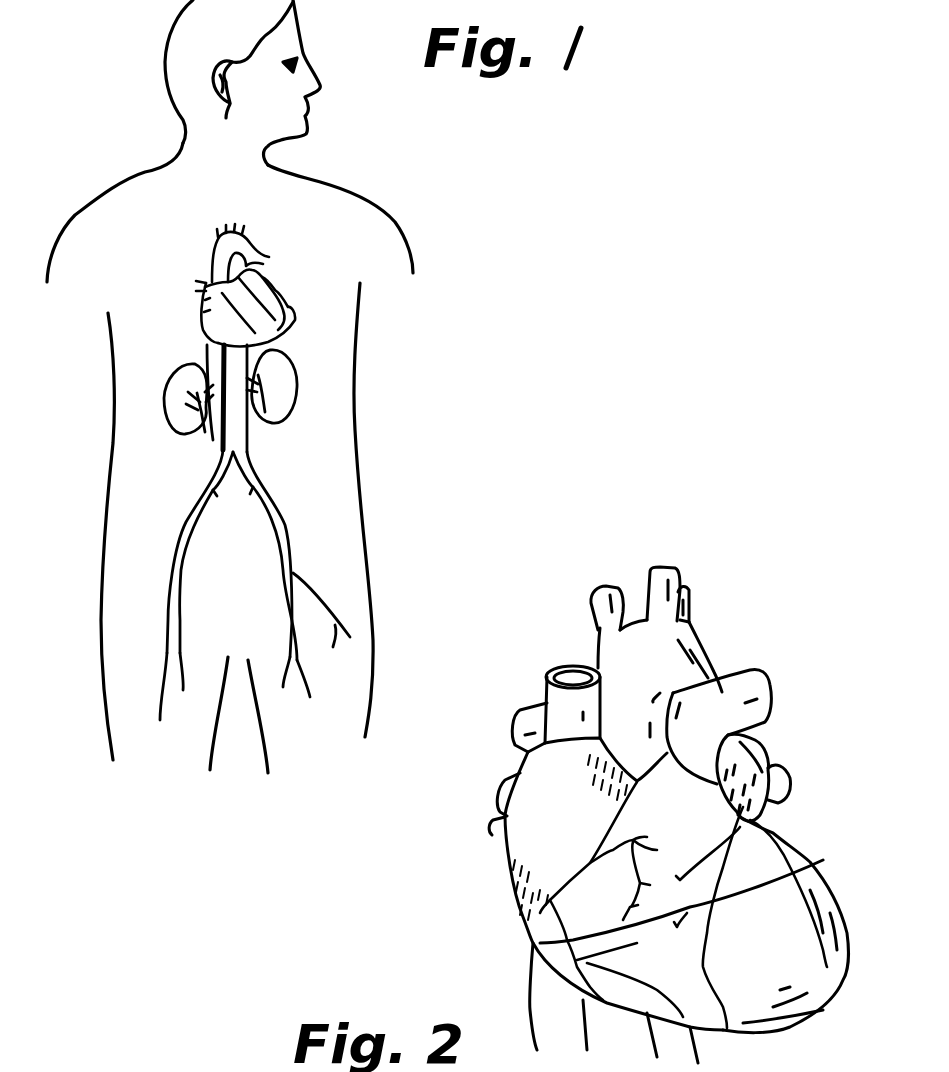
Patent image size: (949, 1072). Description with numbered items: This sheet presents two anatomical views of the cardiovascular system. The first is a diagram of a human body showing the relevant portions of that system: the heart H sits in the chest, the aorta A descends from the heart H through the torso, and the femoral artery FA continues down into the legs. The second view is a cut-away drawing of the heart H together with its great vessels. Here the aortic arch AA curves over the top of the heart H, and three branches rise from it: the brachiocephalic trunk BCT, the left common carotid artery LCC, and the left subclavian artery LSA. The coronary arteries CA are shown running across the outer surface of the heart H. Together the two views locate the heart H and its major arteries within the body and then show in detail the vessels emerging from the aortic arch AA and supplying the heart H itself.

In FIG. 1, the heart H is at (260, 321).
In FIG. 1, the aorta A is at (240, 373).
In FIG. 1, the femoral artery FA is at (287, 530).
In FIG. 2, the brachiocephalic trunk BCT is at (597, 610).
In FIG. 2, the left common carotid artery LCC is at (655, 587).
In FIG. 2, the left subclavian artery LSA is at (687, 598).
In FIG. 2, the aortic arch AA is at (671, 672).
In FIG. 2, the coronary arteries CA is at (741, 870).